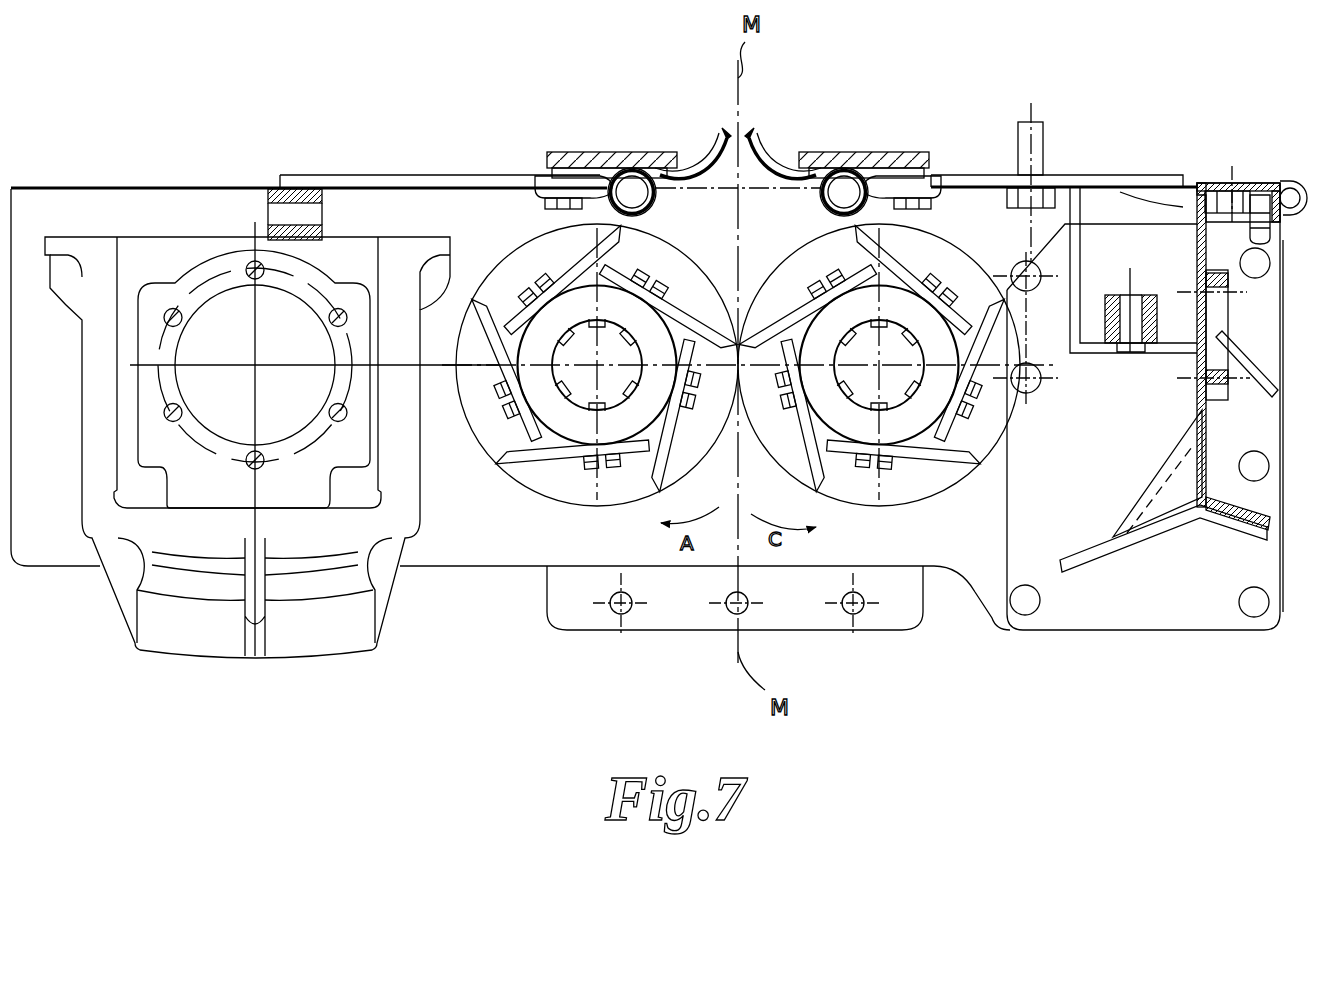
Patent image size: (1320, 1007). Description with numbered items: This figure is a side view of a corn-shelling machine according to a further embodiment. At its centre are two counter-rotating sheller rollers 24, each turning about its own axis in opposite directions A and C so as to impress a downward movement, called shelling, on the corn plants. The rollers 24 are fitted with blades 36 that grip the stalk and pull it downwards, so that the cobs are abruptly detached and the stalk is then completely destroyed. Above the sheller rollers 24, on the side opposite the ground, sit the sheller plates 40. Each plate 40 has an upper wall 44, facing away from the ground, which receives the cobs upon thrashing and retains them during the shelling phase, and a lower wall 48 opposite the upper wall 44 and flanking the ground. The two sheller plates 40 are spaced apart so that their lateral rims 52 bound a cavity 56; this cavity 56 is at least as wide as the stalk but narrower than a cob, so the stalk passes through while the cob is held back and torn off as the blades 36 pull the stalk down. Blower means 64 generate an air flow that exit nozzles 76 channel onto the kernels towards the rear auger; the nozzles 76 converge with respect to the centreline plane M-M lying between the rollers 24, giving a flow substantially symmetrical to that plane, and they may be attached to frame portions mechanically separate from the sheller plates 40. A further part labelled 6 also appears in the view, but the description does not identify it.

The top plate 6 is at (550, 152).
The sheller roller 24 is at (547, 398).
The blades 36 is at (493, 327).
The sheller plates 40 is at (915, 150).
The upper wall 44 is at (650, 149).
The lower wall 48 is at (812, 187).
The lateral rims 52 is at (681, 163).
The cavity 56 is at (712, 193).
The blower means 64 is at (750, 111).
The exit nozzle 76 is at (624, 165).